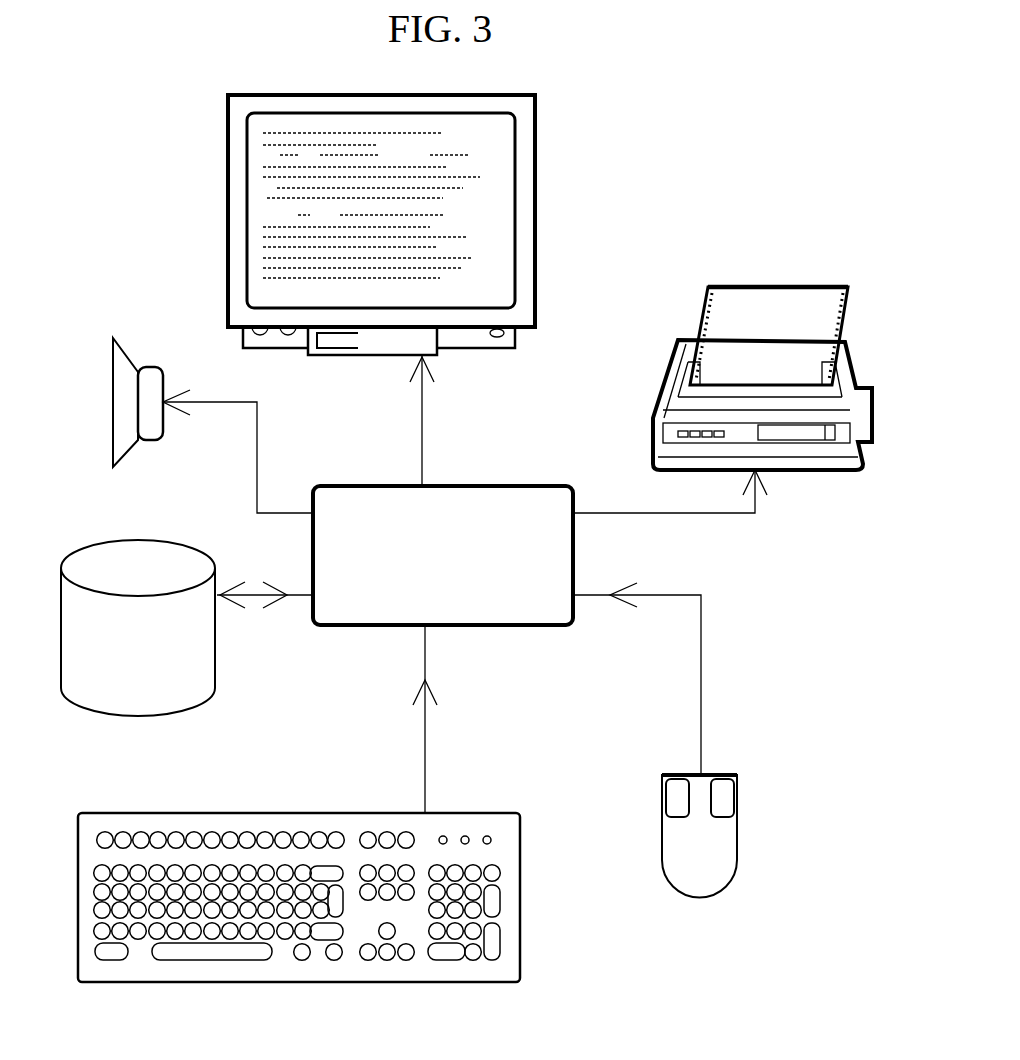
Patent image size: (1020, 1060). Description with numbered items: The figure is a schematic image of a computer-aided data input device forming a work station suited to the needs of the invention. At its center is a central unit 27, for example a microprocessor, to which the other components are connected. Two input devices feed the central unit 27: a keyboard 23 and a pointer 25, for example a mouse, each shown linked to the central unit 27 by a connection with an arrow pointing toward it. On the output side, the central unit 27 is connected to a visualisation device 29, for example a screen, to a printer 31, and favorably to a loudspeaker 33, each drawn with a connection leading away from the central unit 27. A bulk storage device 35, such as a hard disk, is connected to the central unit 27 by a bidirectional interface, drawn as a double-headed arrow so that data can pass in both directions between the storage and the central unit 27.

The keyboard 23 is at (197, 812).
The pointer 25 is at (738, 833).
The central unit 27 is at (468, 484).
The visualisation device 29 is at (537, 218).
The printer 31 is at (780, 283).
The loudspeaker 33 is at (113, 402).
The bulk storage device 35 is at (123, 538).